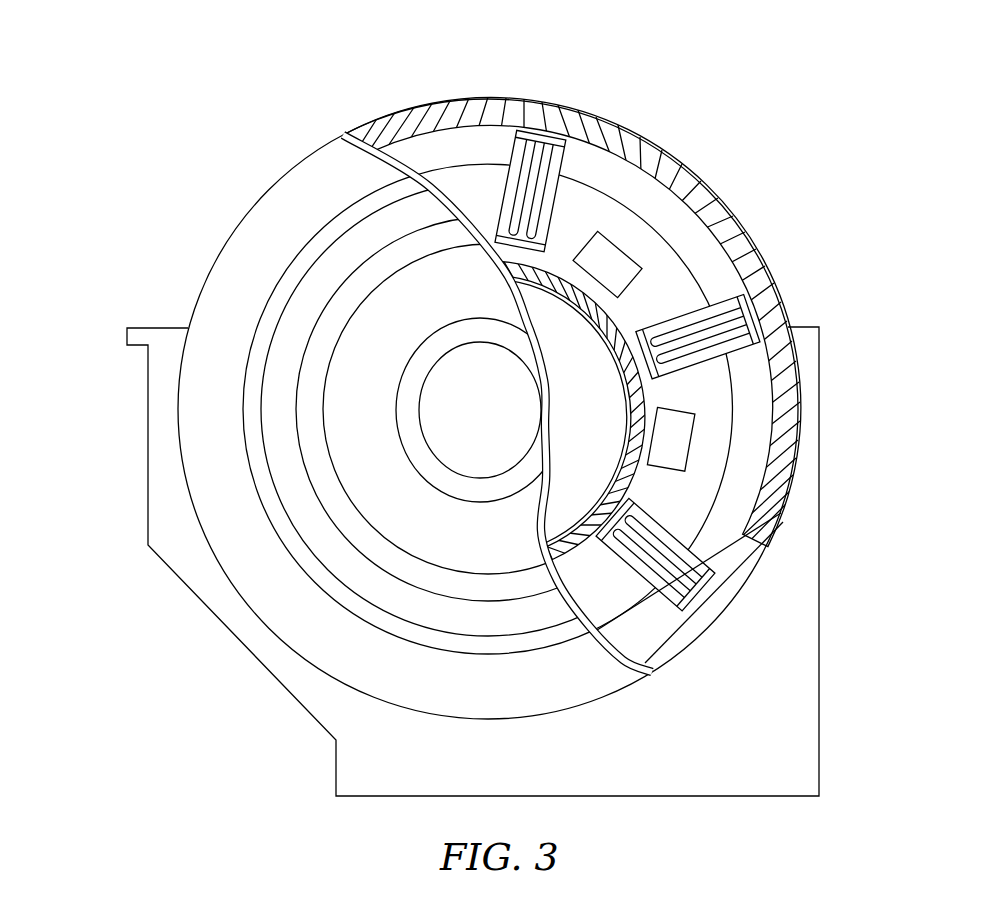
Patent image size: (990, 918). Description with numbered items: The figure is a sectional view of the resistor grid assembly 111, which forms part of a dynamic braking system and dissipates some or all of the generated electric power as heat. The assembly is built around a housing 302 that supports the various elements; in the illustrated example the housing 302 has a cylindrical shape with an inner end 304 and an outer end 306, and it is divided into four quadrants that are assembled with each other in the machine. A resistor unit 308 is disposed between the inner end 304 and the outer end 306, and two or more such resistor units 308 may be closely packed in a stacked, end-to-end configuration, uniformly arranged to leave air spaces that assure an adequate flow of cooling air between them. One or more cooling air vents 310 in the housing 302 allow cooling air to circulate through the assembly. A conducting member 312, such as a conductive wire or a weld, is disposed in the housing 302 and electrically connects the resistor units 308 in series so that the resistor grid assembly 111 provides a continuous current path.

The resistor grid assembly 111 is at (918, 104).
The housing 302 is at (273, 222).
The inner end 304 is at (627, 310).
The outer end 306 is at (660, 157).
The resistor unit 308 is at (733, 545).
The cooling air vent 310 is at (333, 317).
The conducting member 312 is at (730, 423).